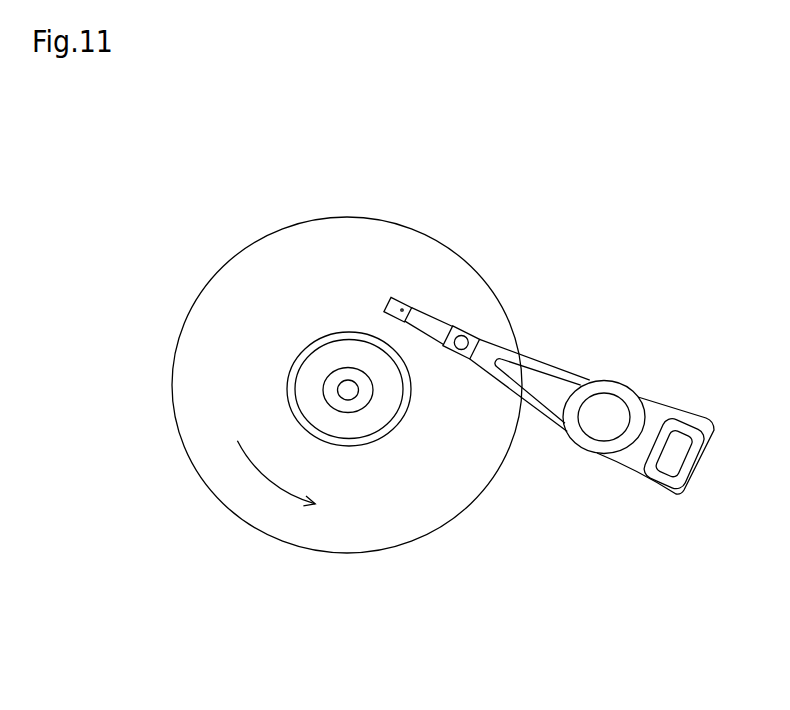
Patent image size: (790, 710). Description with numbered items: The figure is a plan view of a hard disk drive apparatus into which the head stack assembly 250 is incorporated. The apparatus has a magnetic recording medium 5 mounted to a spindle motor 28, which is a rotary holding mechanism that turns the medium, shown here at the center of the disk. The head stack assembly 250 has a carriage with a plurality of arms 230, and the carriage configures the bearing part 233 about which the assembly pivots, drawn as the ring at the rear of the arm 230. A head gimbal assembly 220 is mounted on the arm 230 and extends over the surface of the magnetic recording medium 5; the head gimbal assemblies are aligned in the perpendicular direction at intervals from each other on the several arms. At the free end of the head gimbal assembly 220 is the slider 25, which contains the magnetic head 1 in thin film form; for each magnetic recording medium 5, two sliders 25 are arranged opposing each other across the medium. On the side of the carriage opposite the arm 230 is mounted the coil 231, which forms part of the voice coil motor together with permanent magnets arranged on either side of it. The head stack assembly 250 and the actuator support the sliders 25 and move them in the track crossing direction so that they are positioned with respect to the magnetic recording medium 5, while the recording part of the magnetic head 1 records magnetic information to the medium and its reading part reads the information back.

The magnetic recording medium 5 is at (295, 546).
The spindle motor 28 is at (350, 399).
The slider 25 is at (403, 303).
The magnetic head 1 is at (407, 303).
The head gimbal assembly 220 is at (435, 342).
The arm 230 is at (543, 421).
The bearing part 233 is at (610, 378).
The head stack assembly 250 is at (612, 466).
The coil 231 is at (703, 468).